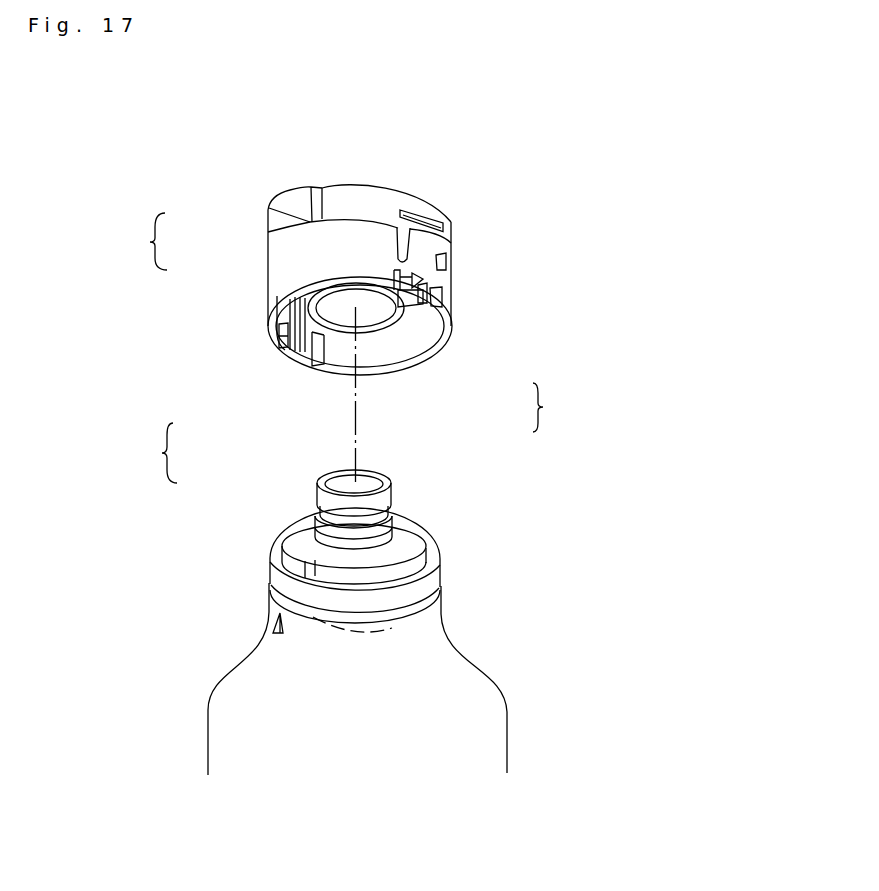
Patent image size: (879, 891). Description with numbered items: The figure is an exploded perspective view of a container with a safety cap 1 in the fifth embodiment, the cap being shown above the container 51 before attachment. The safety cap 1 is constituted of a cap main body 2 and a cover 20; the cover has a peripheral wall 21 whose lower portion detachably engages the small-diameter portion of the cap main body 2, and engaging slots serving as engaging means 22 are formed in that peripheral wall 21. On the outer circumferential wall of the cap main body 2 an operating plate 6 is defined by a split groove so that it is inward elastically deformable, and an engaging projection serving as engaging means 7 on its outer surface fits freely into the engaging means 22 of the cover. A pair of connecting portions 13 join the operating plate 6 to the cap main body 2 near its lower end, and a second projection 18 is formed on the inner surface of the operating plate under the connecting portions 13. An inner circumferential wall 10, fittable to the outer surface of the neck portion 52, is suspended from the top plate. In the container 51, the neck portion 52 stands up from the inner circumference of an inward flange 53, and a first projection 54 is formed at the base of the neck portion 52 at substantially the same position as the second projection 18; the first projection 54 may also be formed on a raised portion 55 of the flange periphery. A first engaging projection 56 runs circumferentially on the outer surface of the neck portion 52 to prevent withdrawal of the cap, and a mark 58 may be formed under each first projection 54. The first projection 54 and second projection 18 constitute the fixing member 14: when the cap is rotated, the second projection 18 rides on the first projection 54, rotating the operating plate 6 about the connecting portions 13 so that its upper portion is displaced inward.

The safety cap 1 is at (294, 268).
The cap main body 2 is at (256, 260).
The operating plate 6 is at (427, 243).
The engaging means 7 is at (417, 213).
The inner circumferential wall 10 is at (373, 332).
The connecting portion 13 is at (440, 280).
The fixing member 14 is at (360, 433).
The second projection 18 is at (282, 350).
The cover 20 is at (256, 218).
The peripheral wall 21 is at (344, 190).
The engaging means 22 is at (410, 218).
The container 51 is at (474, 597).
The neck portion 52 is at (389, 499).
The inward flange 53 is at (433, 549).
The first projection 54 is at (277, 543).
The raised portion 55 is at (312, 523).
The first engaging projection 56 is at (320, 510).
The mark 58 is at (424, 272).